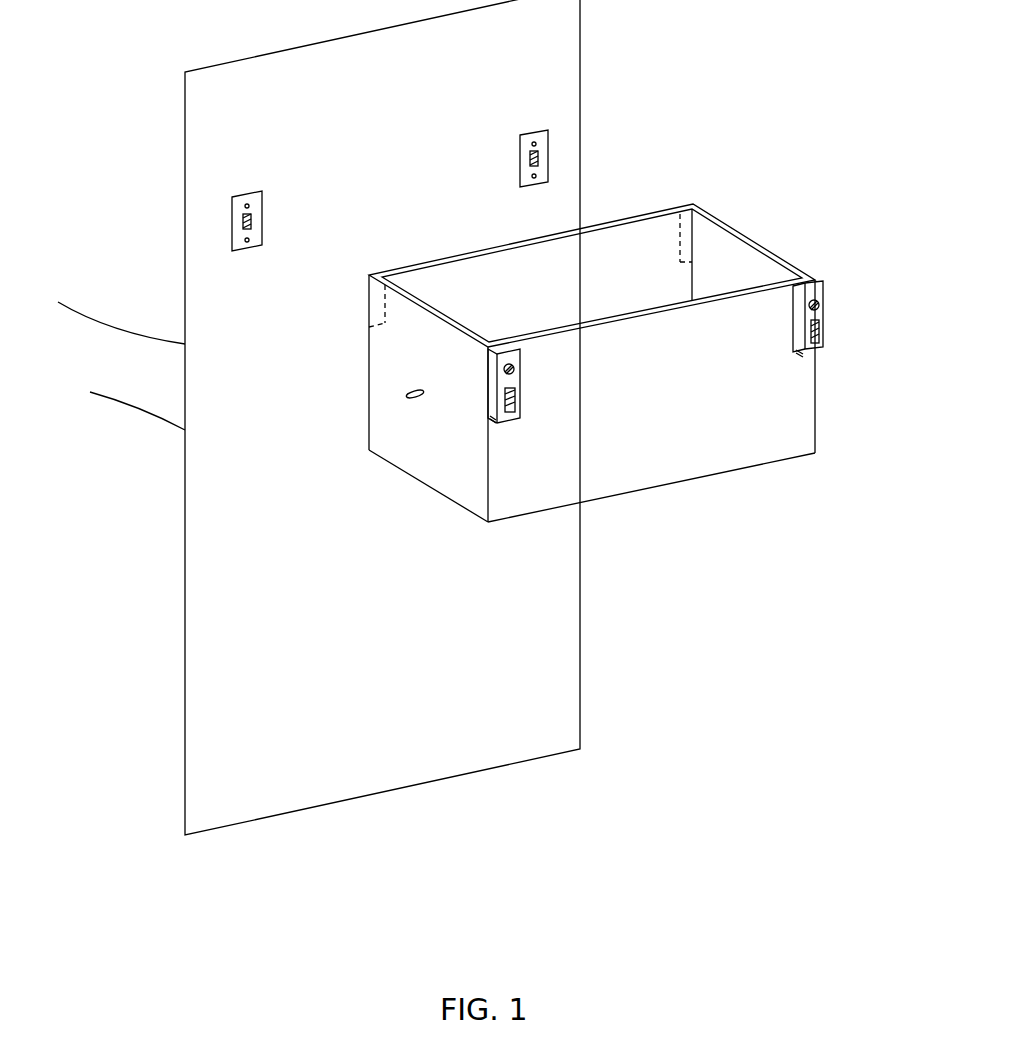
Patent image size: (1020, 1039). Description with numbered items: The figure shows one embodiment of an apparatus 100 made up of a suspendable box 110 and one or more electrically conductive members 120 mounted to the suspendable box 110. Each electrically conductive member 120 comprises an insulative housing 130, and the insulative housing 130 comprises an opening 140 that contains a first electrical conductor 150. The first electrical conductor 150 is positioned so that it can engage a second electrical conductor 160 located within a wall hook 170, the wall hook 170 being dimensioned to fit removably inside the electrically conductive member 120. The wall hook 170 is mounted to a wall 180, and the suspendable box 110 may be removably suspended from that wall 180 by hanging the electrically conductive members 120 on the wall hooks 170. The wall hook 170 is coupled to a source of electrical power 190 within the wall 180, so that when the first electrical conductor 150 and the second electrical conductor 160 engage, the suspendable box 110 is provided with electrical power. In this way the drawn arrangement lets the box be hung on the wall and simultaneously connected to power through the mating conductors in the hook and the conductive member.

The apparatus 100 is at (567, 366).
The suspendable box 110 is at (708, 431).
The electrically conductive member 120 is at (567, 329).
The insulative housing 130 is at (520, 400).
The opening 140 is at (513, 413).
The first electrical conductor 150 is at (506, 363).
The second electrical conductor 160 is at (382, 190).
The wall hook 170 is at (245, 220).
The wall 180 is at (418, 110).
The source of electrical power 190 is at (91, 296).